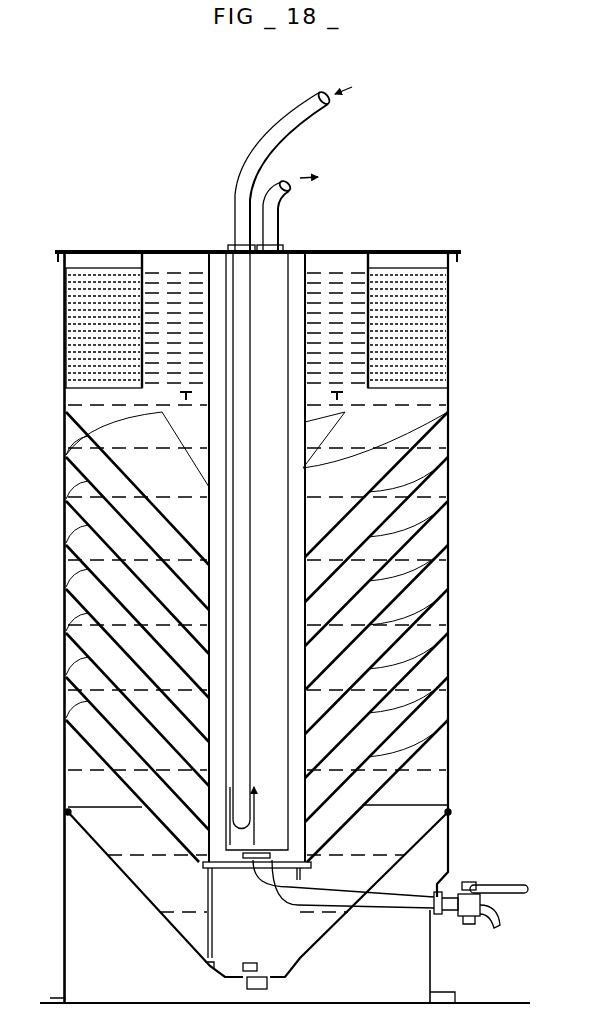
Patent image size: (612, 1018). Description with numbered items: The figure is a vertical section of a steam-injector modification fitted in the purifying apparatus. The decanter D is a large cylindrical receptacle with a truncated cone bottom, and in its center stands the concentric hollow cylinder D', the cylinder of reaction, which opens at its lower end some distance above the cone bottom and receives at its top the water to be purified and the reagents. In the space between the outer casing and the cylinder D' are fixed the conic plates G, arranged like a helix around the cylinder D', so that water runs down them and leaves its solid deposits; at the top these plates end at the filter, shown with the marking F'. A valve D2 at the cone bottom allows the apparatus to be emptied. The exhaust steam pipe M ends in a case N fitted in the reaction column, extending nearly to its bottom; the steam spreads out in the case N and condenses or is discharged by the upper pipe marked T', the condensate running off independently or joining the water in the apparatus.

The decanter D is at (282, 626).
The concentric cylinder D' is at (247, 606).
The valve D2 is at (246, 981).
The filter blocks F' is at (257, 331).
The conic plates G is at (257, 637).
The exhaust steam pipe M is at (290, 458).
The case N is at (290, 506).
The vent pipe T' is at (287, 214).